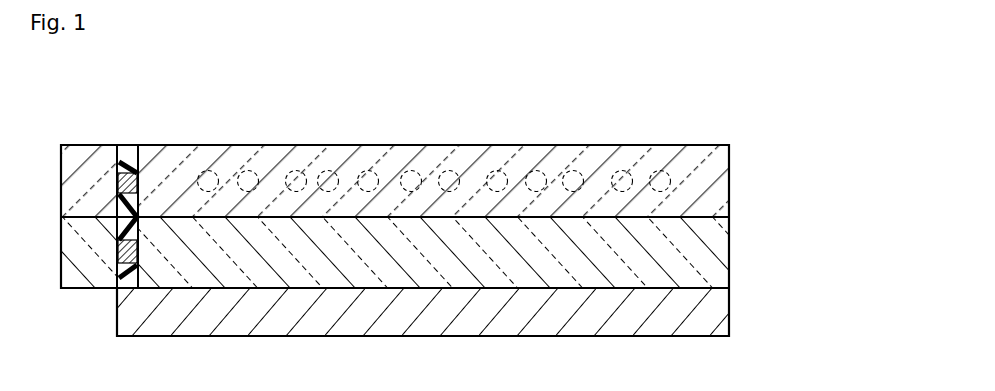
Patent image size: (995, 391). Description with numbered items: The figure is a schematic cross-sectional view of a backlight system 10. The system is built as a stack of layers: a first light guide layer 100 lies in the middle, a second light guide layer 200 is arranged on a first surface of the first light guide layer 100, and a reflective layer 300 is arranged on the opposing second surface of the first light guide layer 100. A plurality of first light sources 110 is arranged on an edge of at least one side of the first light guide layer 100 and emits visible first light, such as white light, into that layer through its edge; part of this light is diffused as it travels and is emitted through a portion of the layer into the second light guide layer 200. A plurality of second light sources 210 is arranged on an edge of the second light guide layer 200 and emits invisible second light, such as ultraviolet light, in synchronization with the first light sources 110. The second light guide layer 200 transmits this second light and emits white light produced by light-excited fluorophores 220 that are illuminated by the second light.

The backlight system 10 is at (648, 92).
The first light guide layer 100 is at (720, 247).
The first light sources 110 is at (128, 265).
The second light guide layer 200 is at (720, 187).
The second light sources 210 is at (131, 173).
The light-excited fluorophores 220 is at (207, 170).
The reflective layer 300 is at (715, 312).